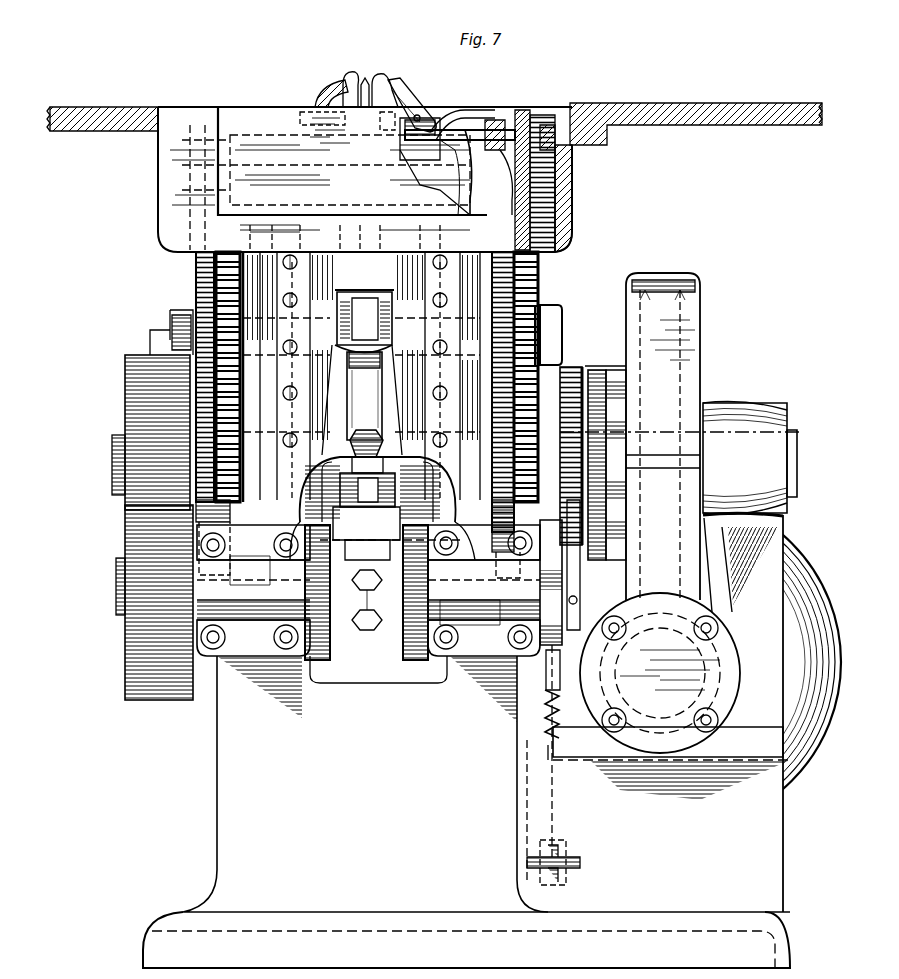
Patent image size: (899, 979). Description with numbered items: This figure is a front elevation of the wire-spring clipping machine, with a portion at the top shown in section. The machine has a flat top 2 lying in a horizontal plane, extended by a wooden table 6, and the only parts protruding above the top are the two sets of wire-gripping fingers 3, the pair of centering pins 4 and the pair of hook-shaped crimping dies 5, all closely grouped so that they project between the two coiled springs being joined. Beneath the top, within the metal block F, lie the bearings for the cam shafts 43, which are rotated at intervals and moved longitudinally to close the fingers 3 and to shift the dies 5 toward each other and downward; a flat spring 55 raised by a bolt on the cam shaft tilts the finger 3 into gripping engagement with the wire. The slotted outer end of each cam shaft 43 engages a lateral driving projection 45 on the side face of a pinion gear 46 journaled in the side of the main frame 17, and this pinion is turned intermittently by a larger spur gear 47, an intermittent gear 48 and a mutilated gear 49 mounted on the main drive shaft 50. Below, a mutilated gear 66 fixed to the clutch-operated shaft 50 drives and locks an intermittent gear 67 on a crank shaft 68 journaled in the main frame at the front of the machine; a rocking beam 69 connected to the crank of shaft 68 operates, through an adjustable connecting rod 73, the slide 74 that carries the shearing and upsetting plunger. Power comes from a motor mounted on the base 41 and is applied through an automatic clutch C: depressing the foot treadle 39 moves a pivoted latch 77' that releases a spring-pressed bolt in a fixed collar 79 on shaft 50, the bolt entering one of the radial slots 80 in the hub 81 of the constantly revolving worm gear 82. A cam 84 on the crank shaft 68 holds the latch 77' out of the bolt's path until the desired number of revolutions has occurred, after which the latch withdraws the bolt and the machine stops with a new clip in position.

The flat top 2 is at (182, 109).
The wooden table 6 is at (766, 105).
The metal block F is at (242, 102).
The main frame 17 is at (574, 212).
The gripping fingers 3 is at (348, 78).
The centering pins 4 is at (365, 80).
The crimping dies 5 is at (326, 90).
The flat spring 55 is at (460, 112).
The cam shafts 43 is at (507, 112).
The lateral driving projection 45 is at (525, 108).
The pinion gear 46 is at (545, 112).
The spur gear 47 is at (190, 287).
The intermittent gear 48 is at (236, 338).
The mutilated gear 66 is at (124, 410).
The main drive shaft 50 is at (112, 472).
The intermittent gear 67 is at (124, 537).
The crank shaft 68 is at (116, 589).
The slide 74 is at (370, 258).
The adjustable connecting rod 73 is at (362, 373).
The rocking beam 69 is at (338, 520).
The mutilated gear 49 is at (238, 488).
The fixed collar 79 is at (508, 500).
The pivoted latch 77' is at (368, 590).
The base 41 is at (698, 914).
The foot treadle 39 is at (578, 862).
The cam 84 is at (540, 588).
The radial slots 80 is at (588, 467).
The hub 81 is at (598, 465).
The automatic clutch C is at (586, 374).
The worm gear 82 is at (675, 368).